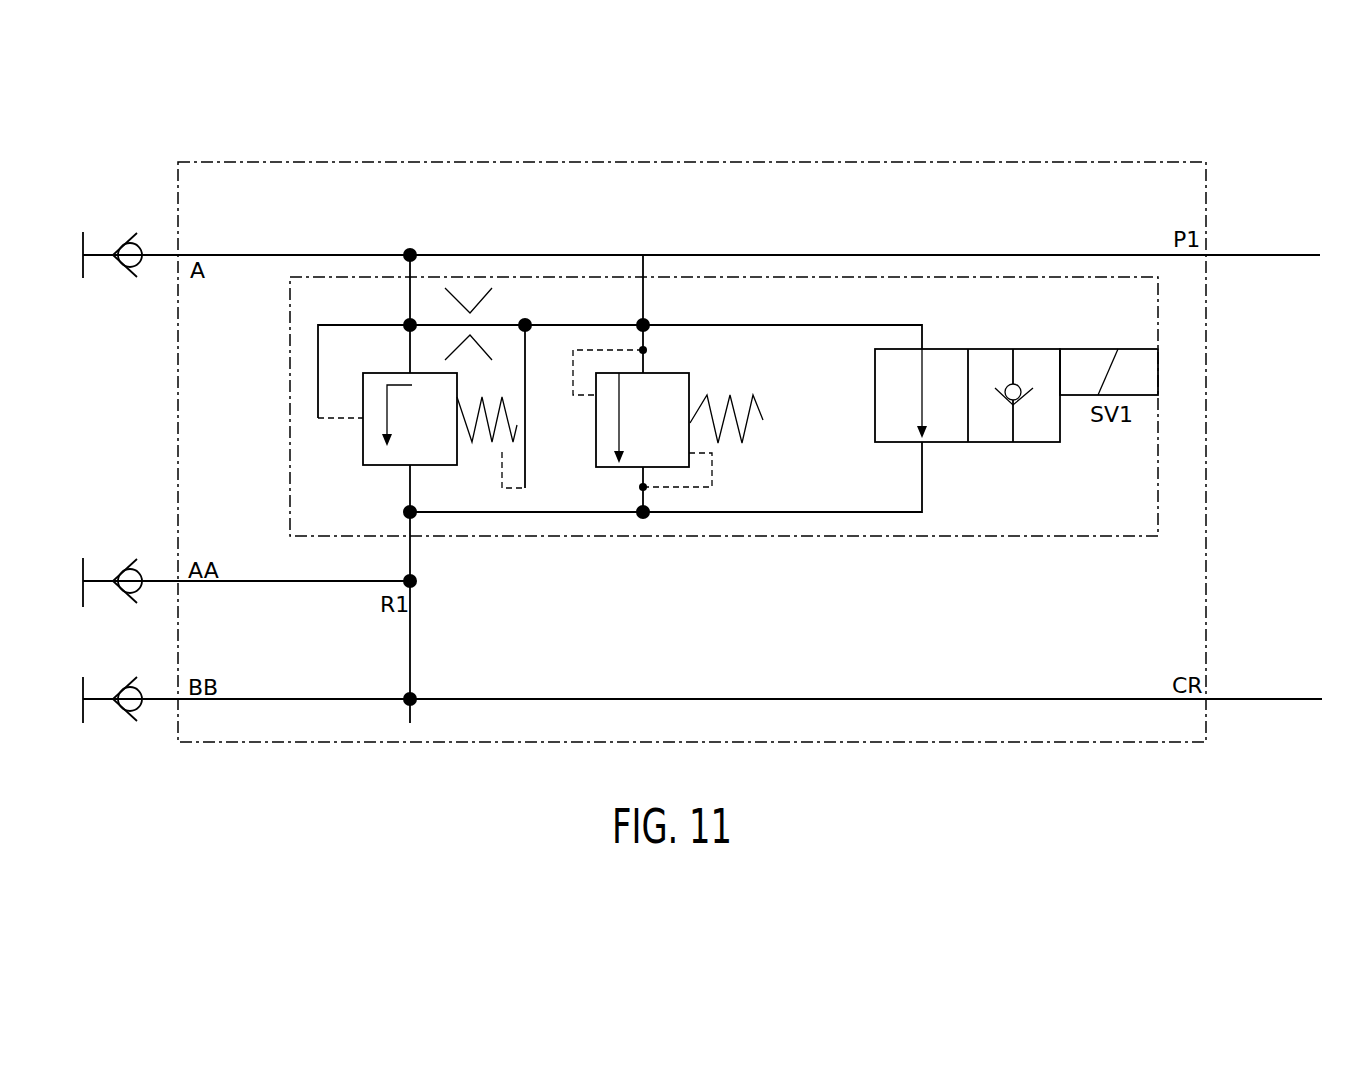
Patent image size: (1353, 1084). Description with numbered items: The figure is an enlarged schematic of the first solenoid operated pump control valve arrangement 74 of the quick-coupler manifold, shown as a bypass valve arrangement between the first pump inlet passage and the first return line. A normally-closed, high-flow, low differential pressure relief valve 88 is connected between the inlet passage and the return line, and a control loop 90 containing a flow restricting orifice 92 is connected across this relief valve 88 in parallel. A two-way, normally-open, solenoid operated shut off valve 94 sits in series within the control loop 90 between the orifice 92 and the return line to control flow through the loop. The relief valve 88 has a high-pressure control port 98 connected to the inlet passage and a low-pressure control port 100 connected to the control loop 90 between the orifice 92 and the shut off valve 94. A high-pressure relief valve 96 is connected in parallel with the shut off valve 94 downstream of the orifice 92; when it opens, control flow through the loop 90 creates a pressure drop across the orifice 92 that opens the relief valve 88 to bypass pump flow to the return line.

The first solenoid operated pump control valve arrangement 74 is at (1158, 490).
The normally-closed, high-flow, low differential pressure relief valve 88 is at (388, 468).
The control loop 90 is at (735, 325).
The flow restricting orifice 92 is at (478, 300).
The two-way, normally-open, solenoid operated shut off valve 94 is at (1038, 349).
The high-pressure relief valve 96 is at (667, 373).
The high-pressure control port 98 is at (340, 420).
The low-pressure control port 100 is at (500, 453).